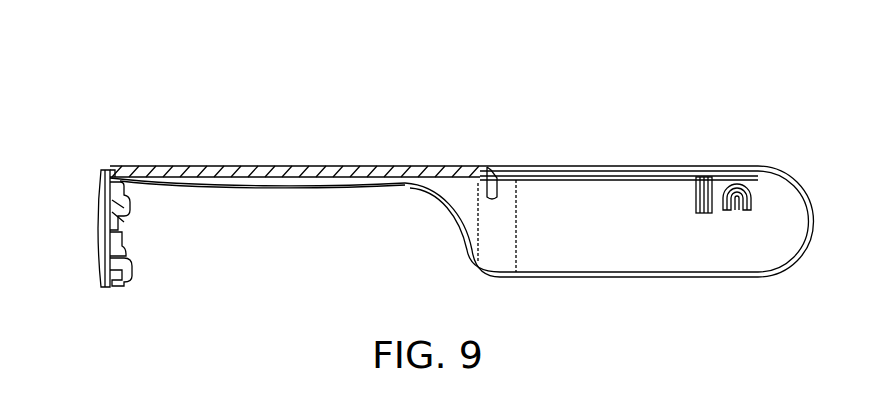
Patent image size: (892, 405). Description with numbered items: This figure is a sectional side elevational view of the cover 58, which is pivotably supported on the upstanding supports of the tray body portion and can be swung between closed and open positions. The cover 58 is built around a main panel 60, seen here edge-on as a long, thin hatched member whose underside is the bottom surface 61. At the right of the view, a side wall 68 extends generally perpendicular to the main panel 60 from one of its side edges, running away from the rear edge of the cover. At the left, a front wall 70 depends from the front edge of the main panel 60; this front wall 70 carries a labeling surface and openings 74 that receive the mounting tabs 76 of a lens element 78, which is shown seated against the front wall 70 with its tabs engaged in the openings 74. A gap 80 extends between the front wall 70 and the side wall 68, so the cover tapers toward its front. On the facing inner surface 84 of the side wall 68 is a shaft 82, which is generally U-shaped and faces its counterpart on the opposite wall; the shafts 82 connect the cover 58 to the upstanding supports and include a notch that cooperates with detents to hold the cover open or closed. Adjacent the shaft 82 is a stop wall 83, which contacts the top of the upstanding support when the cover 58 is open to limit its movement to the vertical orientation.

The cover 58 is at (690, 92).
The main panel 60 is at (290, 165).
The bottom surface 61 is at (350, 186).
The side wall 68 is at (747, 279).
The front wall 70 is at (118, 233).
The opening 74 is at (118, 256).
The mounting tab 76 is at (135, 268).
The lens element 78 is at (96, 229).
The gap 80 is at (297, 258).
The shaft 82 is at (755, 190).
The stop wall 83 is at (697, 203).
The inner surface 84 is at (636, 238).